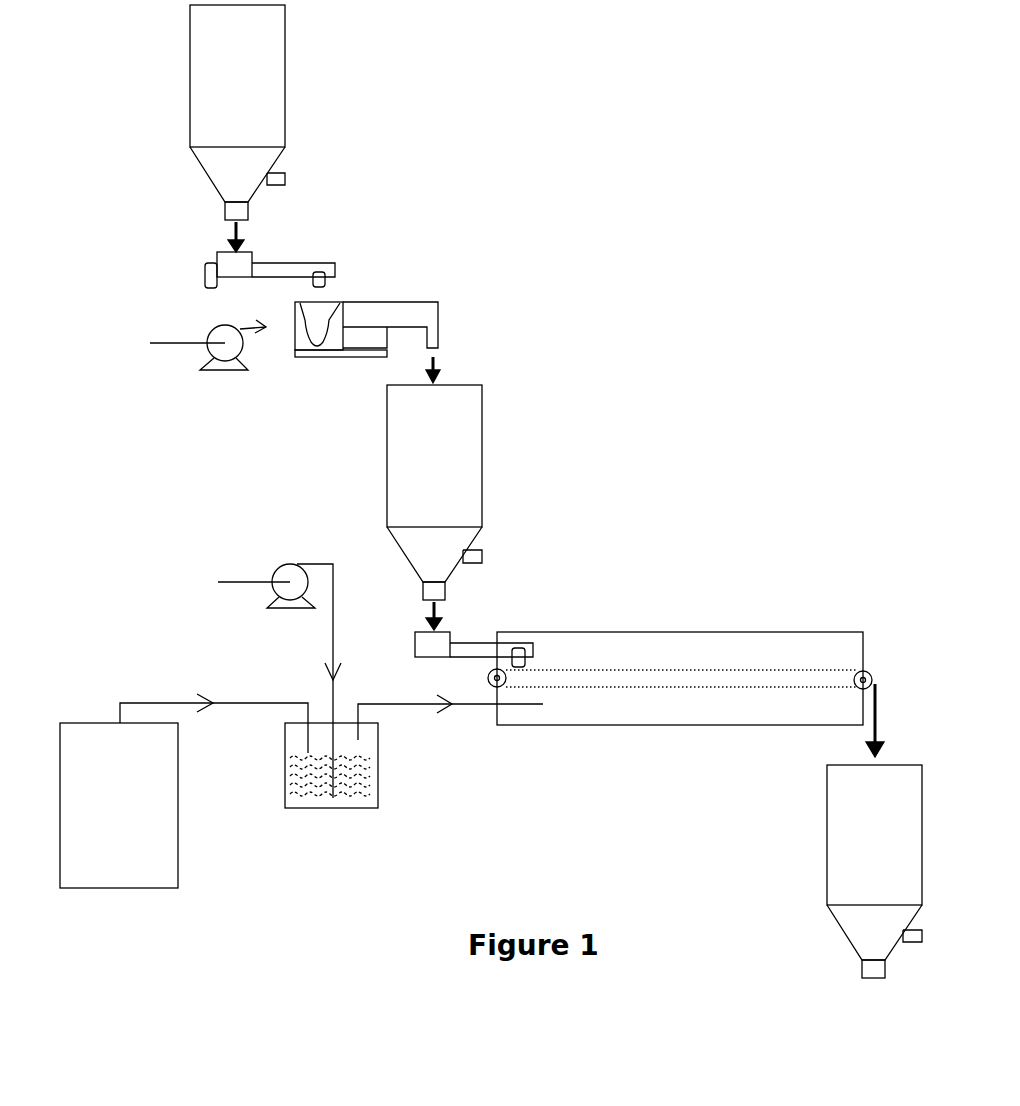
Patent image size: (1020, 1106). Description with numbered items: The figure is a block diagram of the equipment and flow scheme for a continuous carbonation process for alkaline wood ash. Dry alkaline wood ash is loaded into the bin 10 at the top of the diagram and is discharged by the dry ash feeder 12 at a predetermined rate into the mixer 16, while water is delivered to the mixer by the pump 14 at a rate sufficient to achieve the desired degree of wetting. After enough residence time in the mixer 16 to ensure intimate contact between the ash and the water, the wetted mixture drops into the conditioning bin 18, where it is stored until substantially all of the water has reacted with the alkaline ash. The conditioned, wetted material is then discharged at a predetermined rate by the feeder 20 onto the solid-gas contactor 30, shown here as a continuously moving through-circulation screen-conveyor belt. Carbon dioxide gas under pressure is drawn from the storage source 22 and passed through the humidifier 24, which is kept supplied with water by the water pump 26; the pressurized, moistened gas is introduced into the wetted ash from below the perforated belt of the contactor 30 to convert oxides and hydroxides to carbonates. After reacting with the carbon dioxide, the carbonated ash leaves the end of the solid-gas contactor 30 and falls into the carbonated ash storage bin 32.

The bin 10 is at (237, 112).
The dry ash feeder 12 is at (301, 254).
The pump 14 is at (179, 369).
The mixer 16 is at (366, 317).
The conditioning bin 18 is at (471, 492).
The feeder 20 is at (450, 624).
The storage source 22 is at (184, 791).
The humidifier 24 is at (414, 774).
The water pump 26 is at (249, 681).
The solid-gas contactor 30 is at (686, 672).
The carbonated ash storage bin 32 is at (874, 871).